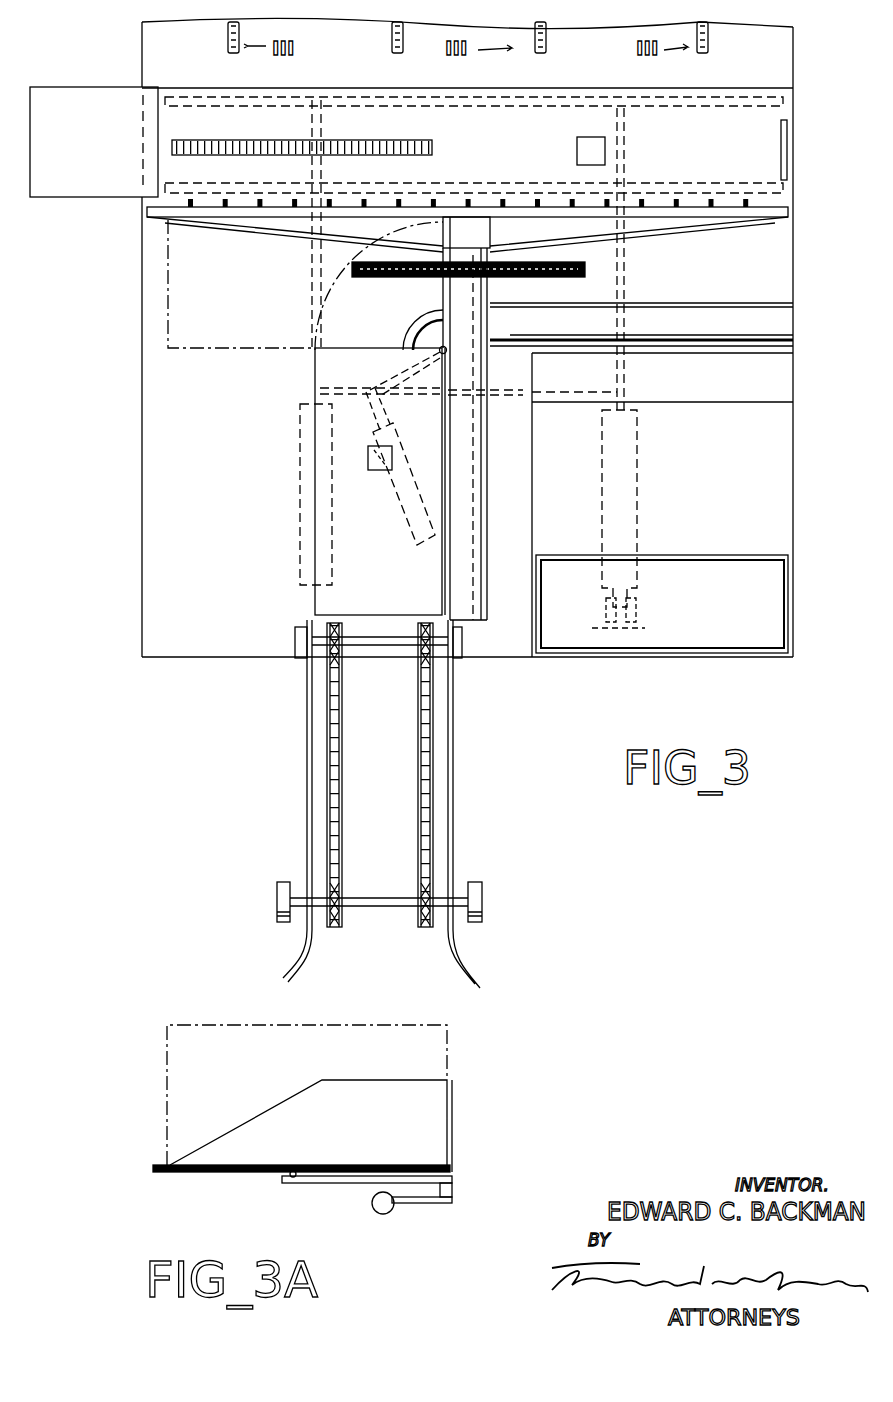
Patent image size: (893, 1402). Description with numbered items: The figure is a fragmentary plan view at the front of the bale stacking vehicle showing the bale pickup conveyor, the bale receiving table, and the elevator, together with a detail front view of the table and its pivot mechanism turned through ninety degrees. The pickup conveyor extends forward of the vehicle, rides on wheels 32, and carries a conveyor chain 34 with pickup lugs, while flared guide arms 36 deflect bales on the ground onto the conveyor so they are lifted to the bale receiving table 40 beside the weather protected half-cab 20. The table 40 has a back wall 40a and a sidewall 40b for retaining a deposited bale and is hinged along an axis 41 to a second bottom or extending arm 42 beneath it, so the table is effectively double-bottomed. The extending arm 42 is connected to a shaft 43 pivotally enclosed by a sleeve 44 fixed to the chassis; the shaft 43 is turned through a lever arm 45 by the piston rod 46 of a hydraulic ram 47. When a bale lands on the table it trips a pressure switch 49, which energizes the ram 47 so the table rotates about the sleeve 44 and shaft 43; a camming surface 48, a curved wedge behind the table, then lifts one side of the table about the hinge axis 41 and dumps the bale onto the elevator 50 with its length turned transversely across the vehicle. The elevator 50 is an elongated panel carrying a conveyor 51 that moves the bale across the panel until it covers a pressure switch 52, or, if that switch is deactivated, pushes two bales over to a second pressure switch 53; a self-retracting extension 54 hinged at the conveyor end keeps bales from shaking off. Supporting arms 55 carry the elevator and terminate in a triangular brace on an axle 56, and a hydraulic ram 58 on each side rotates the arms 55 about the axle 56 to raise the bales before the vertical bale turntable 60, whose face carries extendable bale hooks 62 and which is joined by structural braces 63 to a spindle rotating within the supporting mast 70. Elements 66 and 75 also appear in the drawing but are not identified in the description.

In FIG. 3, the half-cab 20 is at (755, 478).
In FIG. 3, the wheels 32 is at (277, 905).
In FIG. 3, the conveyor chain 34 is at (418, 812).
In FIG. 3, the flared guide arms 36 is at (287, 970).
In FIG. 3, the bale receiving table 40 is at (205, 352).
In FIG. 3A, the bale receiving table 40 is at (172, 1161).
In FIG. 3, the back wall 40a is at (366, 347).
In FIG. 3A, the back wall 40a is at (452, 1115).
In FIG. 3, the sidewall 40b is at (440, 556).
In FIG. 3A, the sidewall 40b is at (372, 1131).
In FIG. 3A, the axis 41 is at (288, 1179).
In FIG. 3A, the second bottom or extending arm 42 is at (345, 1183).
In FIG. 3A, the shaft 43 is at (452, 1180).
In FIG. 3, the sleeve 44 is at (380, 374).
In FIG. 3A, the sleeve 44 is at (454, 1193).
In FIG. 3, the lever arm 45 is at (394, 362).
In FIG. 3A, the lever arm 45 is at (421, 1204).
In FIG. 3, the piston rod 46 is at (372, 406).
In FIG. 3, the hydraulic ram 47 is at (396, 493).
In FIG. 3A, the hydraulic ram 47 is at (376, 1213).
In FIG. 3, the camming surface 48 is at (425, 322).
In FIG. 3, the pressure switch 49 is at (368, 458).
In FIG. 3A, the pressure switch 49 is at (365, 1165).
In FIG. 3, the elevator 50 is at (788, 187).
In FIG. 3, the conveyor 51 is at (348, 142).
In FIG. 3, the pressure switch 52 is at (578, 150).
In FIG. 3, the second pressure switch 53 is at (781, 152).
In FIG. 3, the self-retracting extension 54 is at (78, 199).
In FIG. 3, the supporting arms 55 is at (625, 325).
In FIG. 3, the axle 56 is at (562, 394).
In FIG. 3, the hydraulic ram 58 is at (300, 492).
In FIG. 3, the bale turntable 60 is at (536, 221).
In FIG. 3, the bale hooks 62 is at (465, 206).
In FIG. 3, the structural braces 63 is at (467, 242).
In FIG. 3, the lug 66 is at (668, 208).
In FIG. 3, the supporting mast 70 is at (489, 372).
In FIG. 3, the bar 75 is at (580, 274).